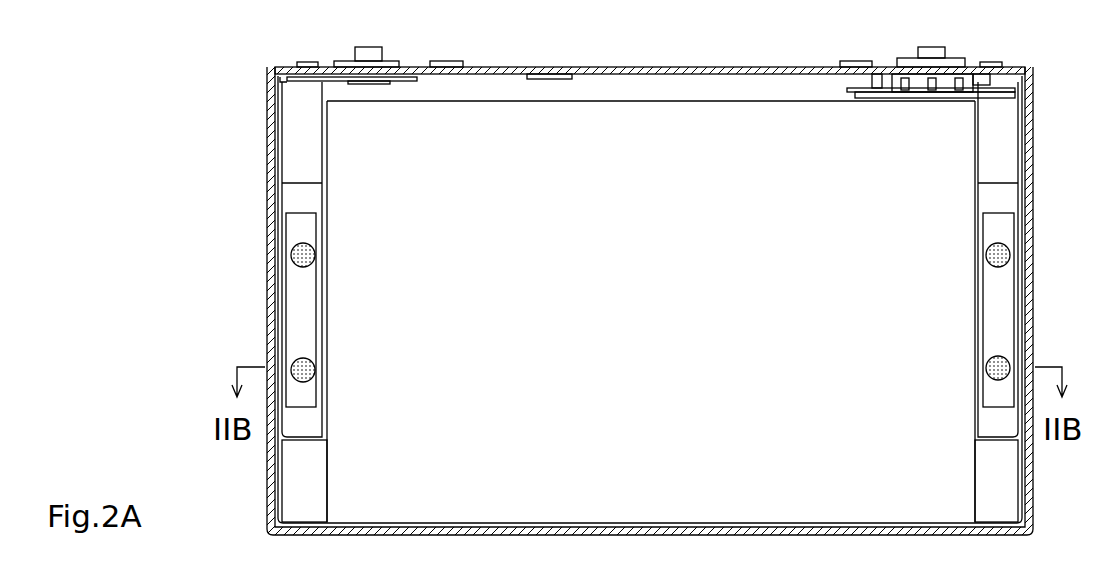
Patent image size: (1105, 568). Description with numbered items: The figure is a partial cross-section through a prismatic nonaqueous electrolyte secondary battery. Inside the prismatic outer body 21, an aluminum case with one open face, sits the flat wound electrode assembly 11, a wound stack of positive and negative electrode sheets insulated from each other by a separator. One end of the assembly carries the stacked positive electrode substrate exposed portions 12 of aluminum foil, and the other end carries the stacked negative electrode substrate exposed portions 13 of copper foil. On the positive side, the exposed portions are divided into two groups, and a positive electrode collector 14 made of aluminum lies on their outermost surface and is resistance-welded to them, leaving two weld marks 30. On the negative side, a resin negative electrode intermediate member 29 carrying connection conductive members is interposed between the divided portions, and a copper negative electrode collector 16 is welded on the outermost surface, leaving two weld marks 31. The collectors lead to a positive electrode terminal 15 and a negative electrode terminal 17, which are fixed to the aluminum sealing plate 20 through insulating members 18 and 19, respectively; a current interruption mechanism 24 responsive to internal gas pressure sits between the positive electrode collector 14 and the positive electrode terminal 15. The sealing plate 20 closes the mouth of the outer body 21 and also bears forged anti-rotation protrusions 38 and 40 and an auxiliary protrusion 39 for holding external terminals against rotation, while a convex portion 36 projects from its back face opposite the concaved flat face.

The flat wound electrode assembly 11 is at (688, 455).
The positive electrode substrate exposed portions 12 is at (990, 480).
The negative electrode substrate exposed portions 13 is at (310, 472).
The positive electrode collector 14 is at (993, 136).
The positive electrode terminal 15 is at (936, 48).
The negative electrode collector 16 is at (290, 131).
The negative electrode terminal 17 is at (360, 54).
The insulating member 18 is at (905, 58).
The insulating member 19 is at (393, 60).
The sealing plate 20 is at (700, 67).
The prismatic outer body 21 is at (1032, 173).
The current interruption mechanism 24 is at (913, 84).
The negative electrode intermediate member 29 is at (1000, 61).
The weld marks 30 is at (1003, 255).
The weld marks 31 is at (298, 258).
The convex portion 36 is at (545, 80).
The anti-rotation protrusion 38 is at (846, 61).
The auxiliary protrusion 39 is at (306, 61).
The anti-rotation protrusion 40 is at (452, 61).